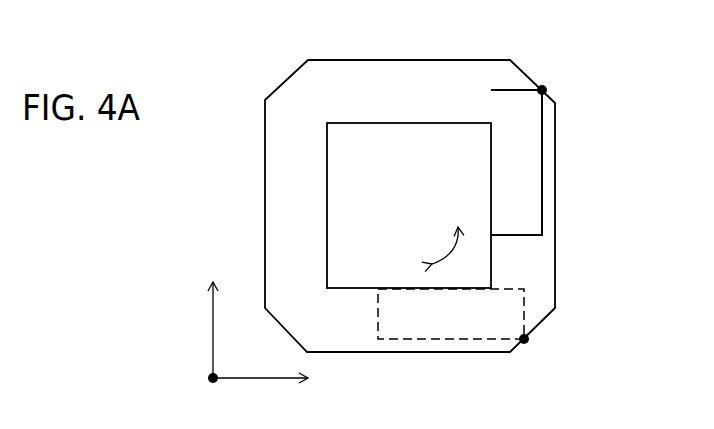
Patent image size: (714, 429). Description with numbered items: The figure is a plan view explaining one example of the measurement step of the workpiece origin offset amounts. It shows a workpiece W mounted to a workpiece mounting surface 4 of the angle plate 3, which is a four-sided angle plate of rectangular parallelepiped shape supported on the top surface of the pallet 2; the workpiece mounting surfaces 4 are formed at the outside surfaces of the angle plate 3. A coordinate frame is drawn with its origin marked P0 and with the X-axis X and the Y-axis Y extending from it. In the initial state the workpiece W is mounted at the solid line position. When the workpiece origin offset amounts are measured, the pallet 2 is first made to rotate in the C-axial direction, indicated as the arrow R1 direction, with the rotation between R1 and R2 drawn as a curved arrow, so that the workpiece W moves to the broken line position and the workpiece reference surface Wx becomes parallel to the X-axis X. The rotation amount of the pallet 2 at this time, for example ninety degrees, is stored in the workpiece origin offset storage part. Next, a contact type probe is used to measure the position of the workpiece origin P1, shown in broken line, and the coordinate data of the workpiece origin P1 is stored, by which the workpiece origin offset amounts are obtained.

The pallet 2 is at (368, 60).
The angle plate 3 is at (433, 115).
The workpiece mounting surface 4 is at (491, 265).
The workpiece origin P1 is at (547, 89).
The workpiece reference surface Wx is at (542, 143).
The workpiece W is at (550, 190).
The arrow R1 direction R1 is at (413, 263).
The second rotation position R2 is at (452, 229).
The origin point P0 is at (217, 396).
The X-axis X is at (271, 380).
The Y-axis Y is at (213, 313).